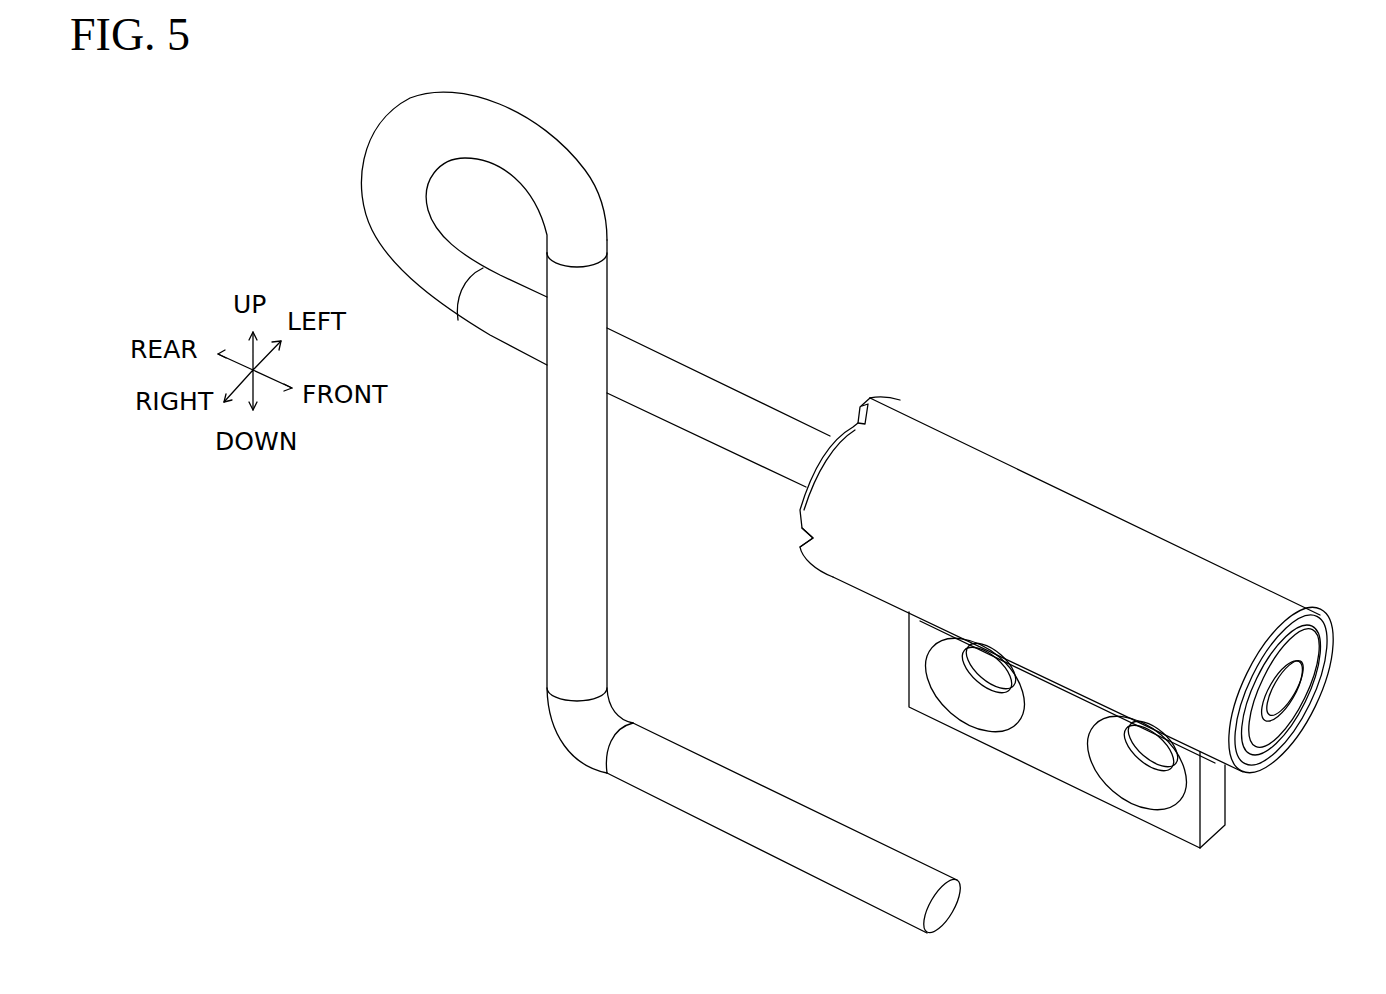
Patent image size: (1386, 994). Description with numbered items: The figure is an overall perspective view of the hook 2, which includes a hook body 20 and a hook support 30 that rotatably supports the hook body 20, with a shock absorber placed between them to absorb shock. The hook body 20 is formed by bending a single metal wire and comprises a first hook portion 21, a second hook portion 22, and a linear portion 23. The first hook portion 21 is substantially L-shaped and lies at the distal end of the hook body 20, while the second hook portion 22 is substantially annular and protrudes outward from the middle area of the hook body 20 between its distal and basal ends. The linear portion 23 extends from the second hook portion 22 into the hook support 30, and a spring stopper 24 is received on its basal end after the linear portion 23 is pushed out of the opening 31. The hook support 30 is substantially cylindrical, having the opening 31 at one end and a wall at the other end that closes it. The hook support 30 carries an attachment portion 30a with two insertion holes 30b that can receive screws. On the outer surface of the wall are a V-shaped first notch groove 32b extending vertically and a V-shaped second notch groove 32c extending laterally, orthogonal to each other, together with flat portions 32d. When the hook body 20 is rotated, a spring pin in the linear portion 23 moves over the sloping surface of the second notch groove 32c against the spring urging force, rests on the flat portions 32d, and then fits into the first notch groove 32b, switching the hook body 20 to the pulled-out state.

The hook 2 is at (1141, 271).
The hook body 20 is at (655, 212).
The first hook portion 21 is at (537, 737).
The second hook portion 22 is at (572, 131).
The linear portion 23 is at (722, 368).
The spring stopper 24 is at (1305, 652).
The hook support 30 is at (1108, 472).
The attachment portion 30a is at (1183, 830).
The insertion hole 30b is at (985, 676).
The opening 31 is at (1292, 736).
The first notch groove 32b is at (856, 406).
The second notch groove 32c is at (800, 528).
The flat portion 32d is at (808, 464).